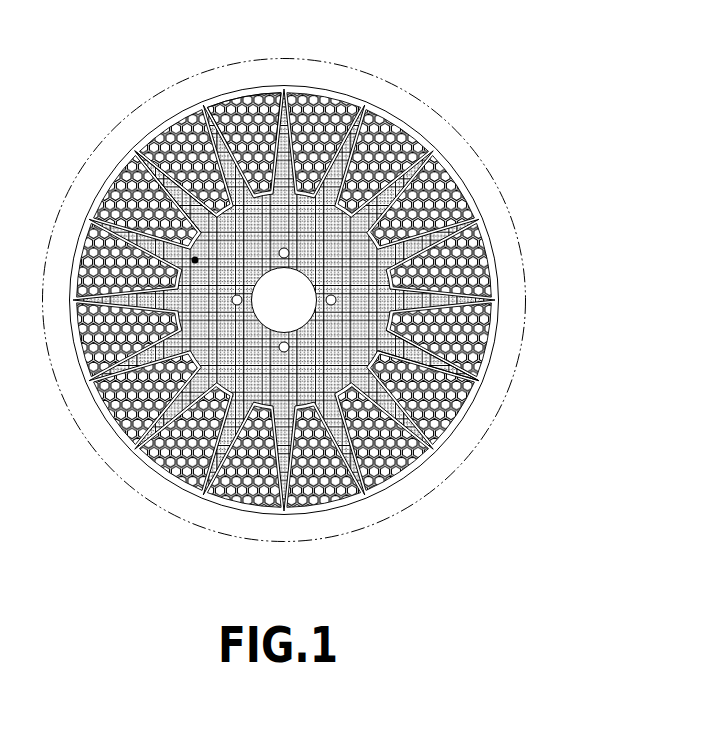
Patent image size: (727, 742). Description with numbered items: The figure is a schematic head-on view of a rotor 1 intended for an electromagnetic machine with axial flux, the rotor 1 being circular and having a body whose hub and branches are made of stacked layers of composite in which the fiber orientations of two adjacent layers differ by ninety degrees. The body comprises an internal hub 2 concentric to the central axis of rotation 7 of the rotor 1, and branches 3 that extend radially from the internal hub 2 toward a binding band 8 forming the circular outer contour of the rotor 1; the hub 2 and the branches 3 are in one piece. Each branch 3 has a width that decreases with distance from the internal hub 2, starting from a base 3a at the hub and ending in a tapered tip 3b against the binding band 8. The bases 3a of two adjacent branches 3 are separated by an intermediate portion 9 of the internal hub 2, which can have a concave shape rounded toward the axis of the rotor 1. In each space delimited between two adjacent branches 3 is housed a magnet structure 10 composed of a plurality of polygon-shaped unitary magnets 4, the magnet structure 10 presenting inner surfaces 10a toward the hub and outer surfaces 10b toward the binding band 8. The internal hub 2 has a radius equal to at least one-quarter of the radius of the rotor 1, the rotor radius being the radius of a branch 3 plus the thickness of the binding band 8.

The rotor 1 is at (160, 514).
The internal hub 2 is at (352, 360).
The branch 3 is at (417, 353).
The base 3a is at (202, 220).
The tapered tip 3b is at (134, 148).
The unitary magnet 4 is at (398, 473).
The central axis of rotation 7 is at (283, 303).
The binding band 8 is at (347, 519).
The intermediate portion 9 is at (300, 193).
The magnet structure 10 is at (427, 207).
The inner surface 10a is at (254, 193).
The outer surface 10b is at (253, 84).